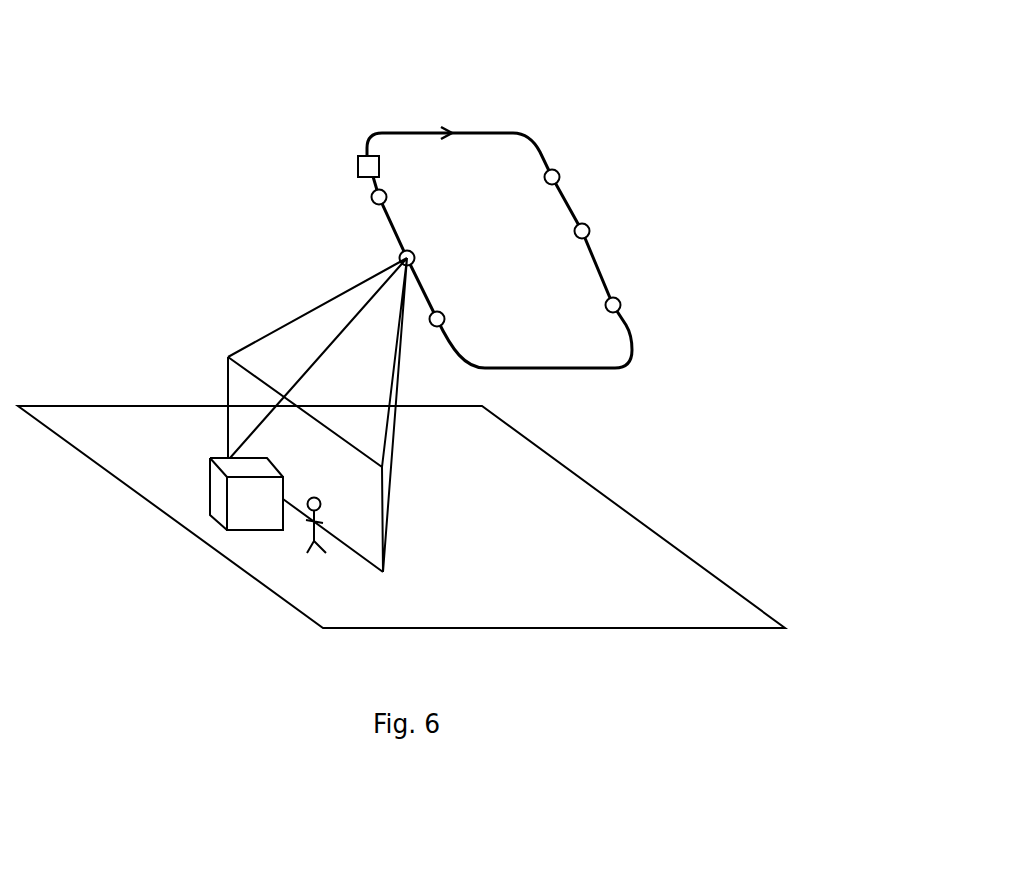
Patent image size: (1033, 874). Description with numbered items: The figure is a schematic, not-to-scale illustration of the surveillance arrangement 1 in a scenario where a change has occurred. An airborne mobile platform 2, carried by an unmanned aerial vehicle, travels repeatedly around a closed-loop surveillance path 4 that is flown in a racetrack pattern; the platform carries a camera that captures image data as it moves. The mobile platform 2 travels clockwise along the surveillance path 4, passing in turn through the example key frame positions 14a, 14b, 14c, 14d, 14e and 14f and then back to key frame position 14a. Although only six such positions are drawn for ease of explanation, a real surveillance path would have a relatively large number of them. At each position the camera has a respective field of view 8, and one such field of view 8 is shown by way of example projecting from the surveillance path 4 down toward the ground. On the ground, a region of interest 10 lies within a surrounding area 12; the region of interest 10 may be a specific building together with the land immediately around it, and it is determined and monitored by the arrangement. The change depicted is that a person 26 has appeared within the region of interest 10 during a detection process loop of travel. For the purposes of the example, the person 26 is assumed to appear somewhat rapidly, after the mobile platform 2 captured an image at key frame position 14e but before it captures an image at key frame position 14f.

The surveillance arrangement 1 is at (640, 54).
The airborne mobile platform 2 is at (358, 168).
The surveillance path 4 is at (500, 133).
The field of view 8 is at (390, 452).
The region of interest 10 is at (263, 517).
The surrounding area 12 is at (115, 418).
The key frame position 14a is at (371, 197).
The key frame position 14b is at (559, 176).
The key frame position 14c is at (589, 231).
The key frame position 14d is at (621, 306).
The key frame position 14e is at (437, 327).
The key frame position 14f is at (414, 256).
The person 26 is at (317, 548).